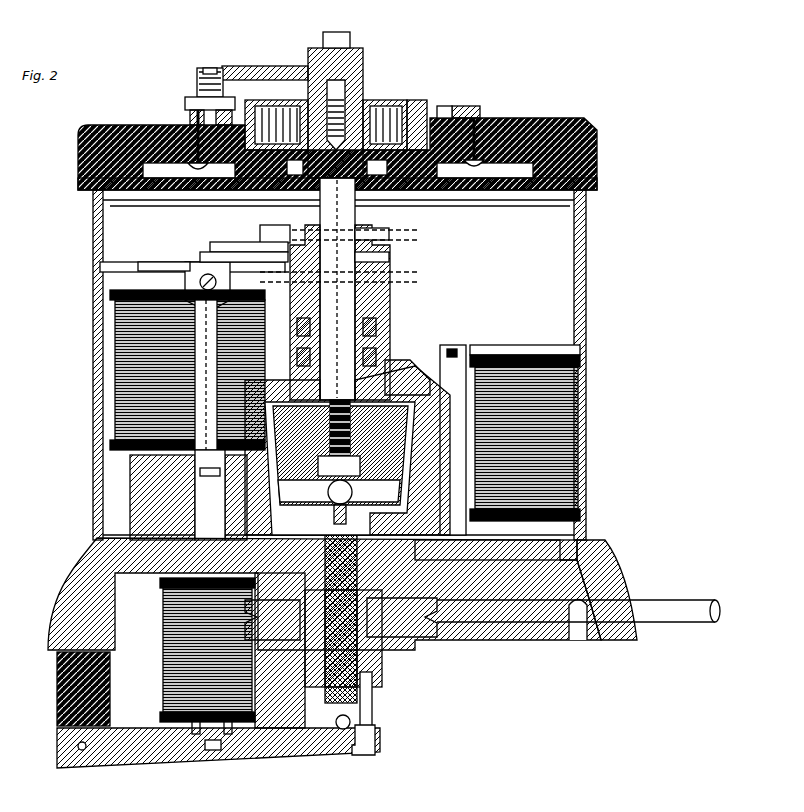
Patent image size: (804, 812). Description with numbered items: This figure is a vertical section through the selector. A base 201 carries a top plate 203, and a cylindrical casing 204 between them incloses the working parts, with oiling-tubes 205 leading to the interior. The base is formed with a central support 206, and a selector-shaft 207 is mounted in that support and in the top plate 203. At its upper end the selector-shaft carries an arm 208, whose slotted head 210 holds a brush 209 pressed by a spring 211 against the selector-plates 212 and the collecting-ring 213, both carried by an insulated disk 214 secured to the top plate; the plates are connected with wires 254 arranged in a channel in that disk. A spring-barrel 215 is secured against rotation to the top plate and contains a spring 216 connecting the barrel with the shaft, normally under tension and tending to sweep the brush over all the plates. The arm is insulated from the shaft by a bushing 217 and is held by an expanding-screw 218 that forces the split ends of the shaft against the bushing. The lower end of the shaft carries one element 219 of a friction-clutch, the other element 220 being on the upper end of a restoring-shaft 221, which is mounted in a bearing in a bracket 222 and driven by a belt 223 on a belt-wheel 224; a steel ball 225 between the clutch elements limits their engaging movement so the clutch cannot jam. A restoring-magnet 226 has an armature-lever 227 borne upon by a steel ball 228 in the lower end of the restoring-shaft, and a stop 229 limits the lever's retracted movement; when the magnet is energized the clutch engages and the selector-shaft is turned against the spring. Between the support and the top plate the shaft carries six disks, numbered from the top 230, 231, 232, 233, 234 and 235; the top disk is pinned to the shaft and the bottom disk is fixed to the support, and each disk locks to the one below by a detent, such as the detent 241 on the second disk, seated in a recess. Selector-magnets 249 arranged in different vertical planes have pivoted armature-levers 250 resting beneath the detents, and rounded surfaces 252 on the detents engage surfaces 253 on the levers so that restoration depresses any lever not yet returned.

The base 201 is at (345, 633).
The top plate 203 is at (490, 206).
The cylindrical casing 204 is at (586, 330).
The oiling-tubes 205 is at (405, 355).
The central support 206 is at (415, 370).
The selector-shaft 207 is at (356, 50).
The arm 208 is at (265, 64).
The brush 209 is at (185, 100).
The slotted head 210 is at (197, 76).
The spring 211 is at (212, 68).
The selector-plates 212 is at (190, 114).
The collecting-ring 213 is at (474, 106).
The insulated disk 214 is at (536, 107).
The spring-barrel 215 is at (425, 104).
The spring 216 is at (390, 110).
The bushing 217 is at (318, 48).
The expanding-screw 218 is at (336, 32).
The friction-clutch element 219 is at (339, 451).
The friction-clutch element 220 is at (347, 450).
The restoring-shaft 221 is at (320, 664).
The bracket 222 is at (372, 677).
The belt 223 is at (510, 614).
The belt-wheel 224 is at (432, 637).
The steel ball 225 is at (353, 492).
The restoring-magnet 226 is at (195, 656).
The armature-lever 227 is at (265, 728).
The steel ball 228 is at (336, 722).
The stop 229 is at (376, 741).
The top disk 230 is at (390, 232).
The second disk 231 is at (390, 258).
The third disk 232 is at (390, 286).
The fourth disk 233 is at (390, 306).
The fifth disk 234 is at (412, 362).
The bottom disk 235 is at (456, 440).
The detent 241 is at (300, 236).
The selector-magnets 249 is at (115, 338).
The armature-levers 250 is at (256, 242).
The rounded surfaces 252 is at (100, 265).
The surfaces 253 is at (185, 283).
The wires 254 is at (188, 168).